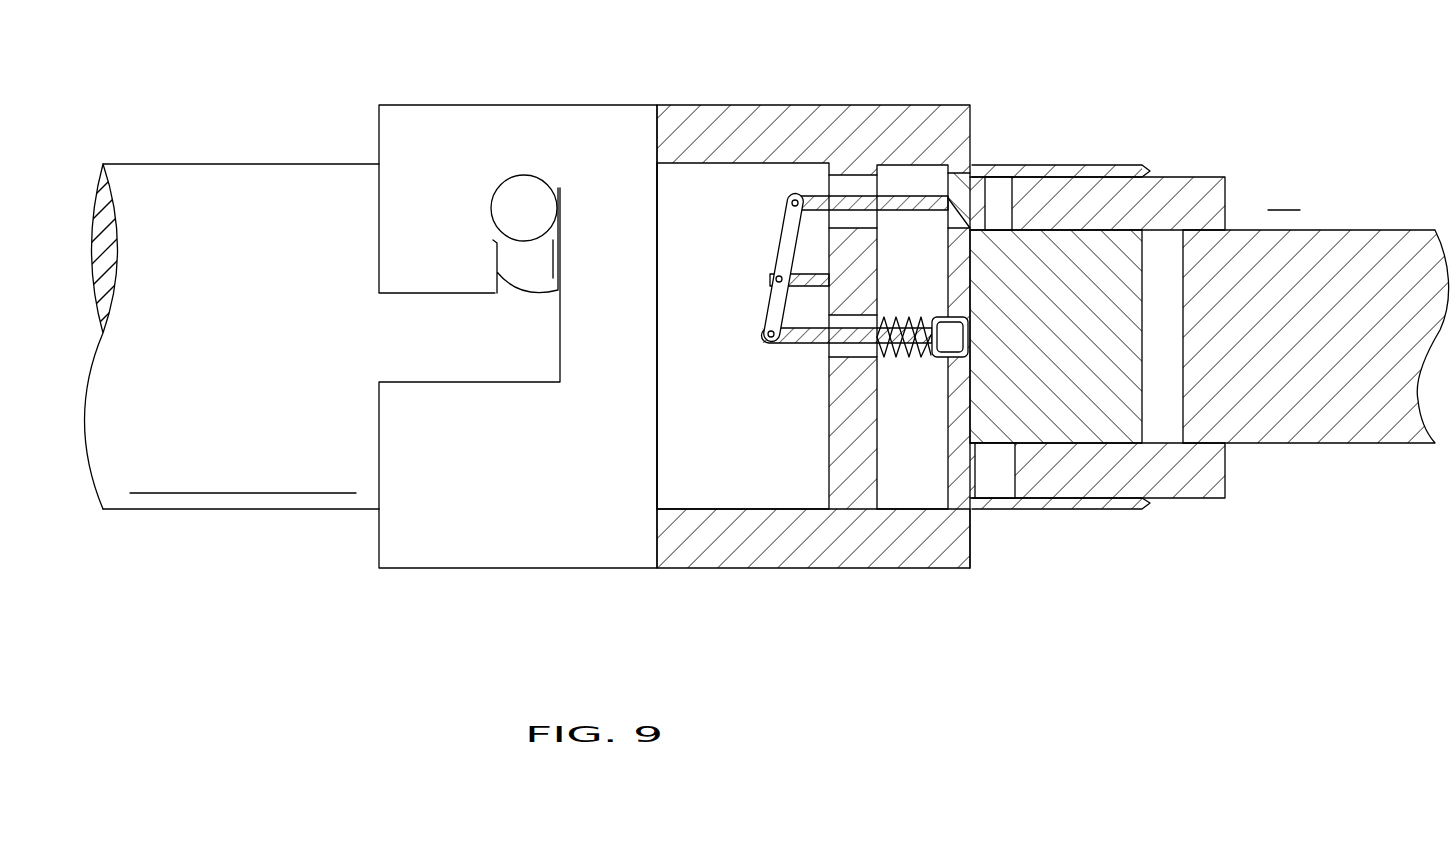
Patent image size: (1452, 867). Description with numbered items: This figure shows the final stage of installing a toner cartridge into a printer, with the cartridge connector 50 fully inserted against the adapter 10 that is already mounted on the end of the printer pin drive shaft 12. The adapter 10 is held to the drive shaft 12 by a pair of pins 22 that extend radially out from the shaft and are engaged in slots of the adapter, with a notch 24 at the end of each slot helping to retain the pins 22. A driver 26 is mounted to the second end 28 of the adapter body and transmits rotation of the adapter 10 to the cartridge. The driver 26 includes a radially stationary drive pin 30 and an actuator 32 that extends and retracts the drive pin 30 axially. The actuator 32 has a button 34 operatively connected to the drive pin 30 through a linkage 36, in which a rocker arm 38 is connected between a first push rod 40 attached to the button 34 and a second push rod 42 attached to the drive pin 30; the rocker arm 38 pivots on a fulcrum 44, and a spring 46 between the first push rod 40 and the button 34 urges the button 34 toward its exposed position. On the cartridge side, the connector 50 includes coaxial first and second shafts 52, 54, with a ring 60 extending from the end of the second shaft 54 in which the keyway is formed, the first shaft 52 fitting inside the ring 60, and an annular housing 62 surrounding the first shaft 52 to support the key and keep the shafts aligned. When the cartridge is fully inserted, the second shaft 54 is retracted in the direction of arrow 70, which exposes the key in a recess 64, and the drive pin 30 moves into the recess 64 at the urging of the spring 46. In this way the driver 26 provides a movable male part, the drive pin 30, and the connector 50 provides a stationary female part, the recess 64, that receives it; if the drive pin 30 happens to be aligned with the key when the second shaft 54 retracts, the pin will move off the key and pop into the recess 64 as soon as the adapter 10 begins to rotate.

The adapter 10 is at (656, 48).
The drive shaft 12 is at (222, 177).
The pins 22 is at (517, 203).
The notch 24 is at (492, 217).
The driver 26 is at (766, 386).
The second end 28 is at (958, 555).
The drive pin 30 is at (948, 215).
The actuator 32 is at (771, 362).
The button 34 is at (944, 357).
The linkage 36 is at (752, 259).
The rocker arm 38 is at (760, 322).
The first push rod 40 is at (806, 344).
The second push rod 42 is at (817, 205).
The fulcrum 44 is at (777, 287).
The spring 46 is at (913, 356).
The connector 50 is at (1064, 108).
The first shaft 52 is at (985, 272).
The second shaft 54 is at (1360, 238).
The ring 60 is at (1178, 183).
The annular housing 62 is at (1092, 172).
The recess 64 is at (998, 185).
The arrow 70 is at (1300, 210).